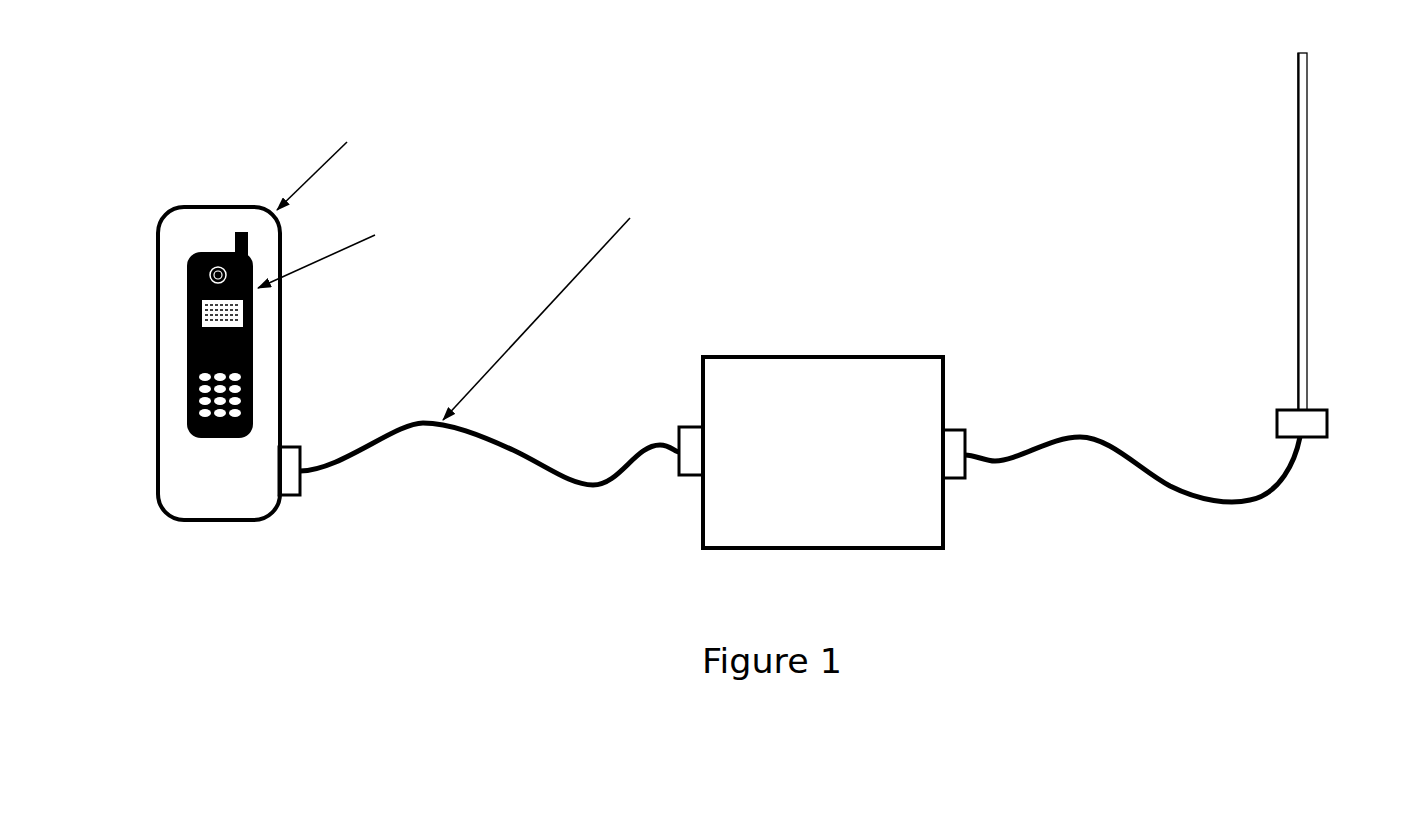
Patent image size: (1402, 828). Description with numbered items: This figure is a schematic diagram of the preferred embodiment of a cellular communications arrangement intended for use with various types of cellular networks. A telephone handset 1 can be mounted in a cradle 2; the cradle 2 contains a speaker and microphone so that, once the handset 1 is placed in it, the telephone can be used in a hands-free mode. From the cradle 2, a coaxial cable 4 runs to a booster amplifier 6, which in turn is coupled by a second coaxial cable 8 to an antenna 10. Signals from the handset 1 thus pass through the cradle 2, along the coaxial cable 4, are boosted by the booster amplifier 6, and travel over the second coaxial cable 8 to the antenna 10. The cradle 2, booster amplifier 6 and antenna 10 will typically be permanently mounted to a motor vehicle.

The telephone handset 1 is at (180, 375).
The cradle 2 is at (158, 252).
The coaxial cable 4 is at (593, 489).
The booster amplifier 6 is at (870, 356).
The second coaxial cable 8 is at (1135, 465).
The antenna 10 is at (1308, 242).